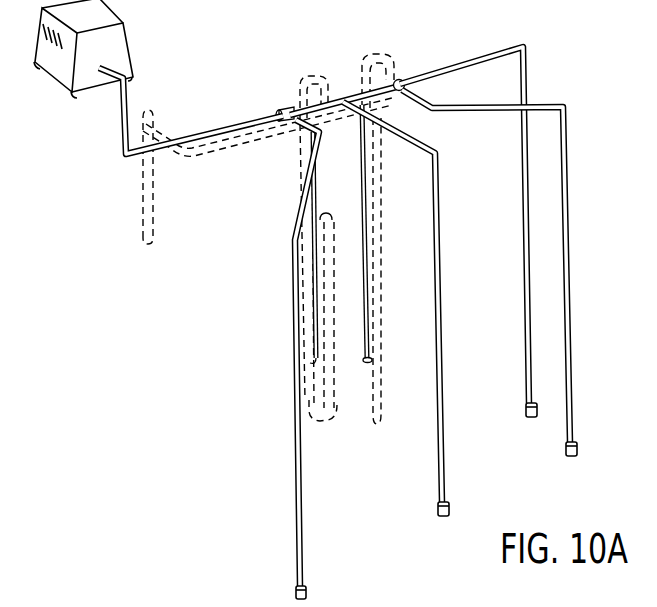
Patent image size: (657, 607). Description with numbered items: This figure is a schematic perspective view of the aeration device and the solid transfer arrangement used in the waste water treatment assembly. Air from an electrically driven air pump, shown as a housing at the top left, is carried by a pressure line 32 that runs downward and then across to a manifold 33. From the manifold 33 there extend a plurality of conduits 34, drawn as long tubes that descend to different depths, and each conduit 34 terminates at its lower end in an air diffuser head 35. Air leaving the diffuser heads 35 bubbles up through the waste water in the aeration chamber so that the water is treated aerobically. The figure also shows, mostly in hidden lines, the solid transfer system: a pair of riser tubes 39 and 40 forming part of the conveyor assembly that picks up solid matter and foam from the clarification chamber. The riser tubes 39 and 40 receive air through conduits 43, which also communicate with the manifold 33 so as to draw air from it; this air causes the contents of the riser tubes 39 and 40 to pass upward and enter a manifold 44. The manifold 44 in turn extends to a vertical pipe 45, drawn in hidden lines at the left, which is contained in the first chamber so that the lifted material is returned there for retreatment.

The pressure line 32 is at (127, 160).
The manifold 33 is at (398, 78).
The conduits 34 is at (298, 413).
The air diffuser head 35 is at (297, 589).
The riser tube 39 is at (298, 173).
The riser tube 40 is at (377, 258).
The conduits 43 is at (313, 323).
The manifold 44 is at (257, 137).
The vertical pipe 45 is at (153, 213).